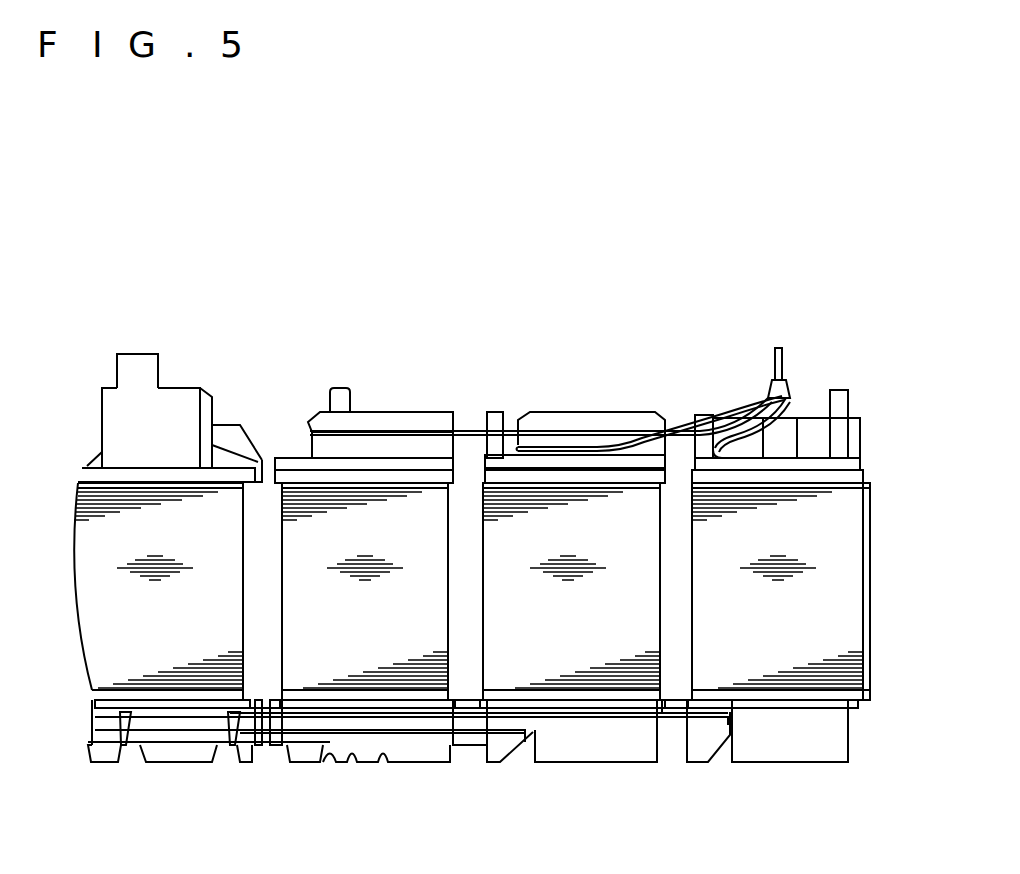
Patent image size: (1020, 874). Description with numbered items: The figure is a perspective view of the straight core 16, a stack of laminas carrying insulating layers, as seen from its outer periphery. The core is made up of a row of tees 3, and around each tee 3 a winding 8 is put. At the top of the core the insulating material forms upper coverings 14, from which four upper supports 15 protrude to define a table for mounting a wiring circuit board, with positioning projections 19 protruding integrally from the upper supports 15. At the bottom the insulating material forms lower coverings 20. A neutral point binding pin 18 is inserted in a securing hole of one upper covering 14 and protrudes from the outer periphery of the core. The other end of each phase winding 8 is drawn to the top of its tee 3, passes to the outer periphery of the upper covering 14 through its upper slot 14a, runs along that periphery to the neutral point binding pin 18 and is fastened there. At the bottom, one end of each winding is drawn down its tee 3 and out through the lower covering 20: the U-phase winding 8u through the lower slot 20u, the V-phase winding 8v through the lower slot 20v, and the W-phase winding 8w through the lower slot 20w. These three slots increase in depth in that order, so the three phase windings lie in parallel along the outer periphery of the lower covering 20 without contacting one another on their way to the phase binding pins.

The tee 3 is at (835, 605).
The winding 8 is at (672, 412).
The U-phase winding 8u is at (173, 750).
The V-phase winding 8v is at (200, 737).
The W-phase winding 8w is at (428, 715).
The upper covering 14 is at (560, 418).
The upper slot 14a is at (718, 414).
The upper support 15 is at (178, 404).
The straight core 16 is at (523, 255).
The neutral point binding pin 18 is at (775, 363).
The positioning projection 19 is at (137, 373).
The lower covering 20 is at (627, 740).
The lower slot for the U phase 20u is at (322, 755).
The lower slot for the V phase 20v is at (510, 750).
The lower slot for the W phase 20w is at (718, 752).